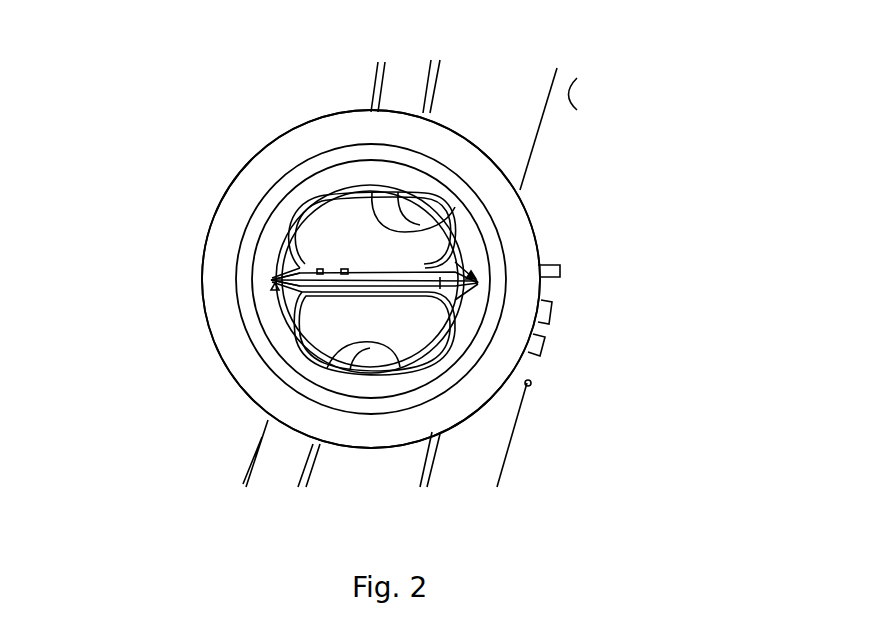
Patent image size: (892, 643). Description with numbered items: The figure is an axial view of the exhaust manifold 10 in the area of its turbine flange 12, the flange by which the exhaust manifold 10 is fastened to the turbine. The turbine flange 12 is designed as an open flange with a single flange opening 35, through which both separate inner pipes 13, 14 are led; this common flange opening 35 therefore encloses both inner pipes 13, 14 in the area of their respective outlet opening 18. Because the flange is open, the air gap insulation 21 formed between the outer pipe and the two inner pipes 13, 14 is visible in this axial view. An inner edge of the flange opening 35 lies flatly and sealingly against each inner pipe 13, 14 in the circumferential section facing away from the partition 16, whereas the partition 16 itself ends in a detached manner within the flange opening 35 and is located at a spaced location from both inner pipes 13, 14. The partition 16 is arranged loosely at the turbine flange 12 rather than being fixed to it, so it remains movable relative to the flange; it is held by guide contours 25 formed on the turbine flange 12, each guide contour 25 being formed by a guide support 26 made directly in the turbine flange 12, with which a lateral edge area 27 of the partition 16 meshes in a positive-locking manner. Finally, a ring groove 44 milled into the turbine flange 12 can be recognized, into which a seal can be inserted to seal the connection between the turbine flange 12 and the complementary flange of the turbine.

The exhaust manifold 10 is at (675, 147).
The turbine flange 12 is at (297, 150).
The inner pipe 13 is at (438, 222).
The inner pipe 14 is at (395, 362).
The partition 16 is at (440, 283).
The outlet opening 18 is at (326, 200).
The air gap insulation 21 is at (293, 265).
The guide contour 25 is at (471, 272).
The guide support 26 is at (270, 270).
The lateral edge area 27 is at (268, 274).
The flange opening 35 is at (430, 265).
The ring groove 44 is at (440, 173).